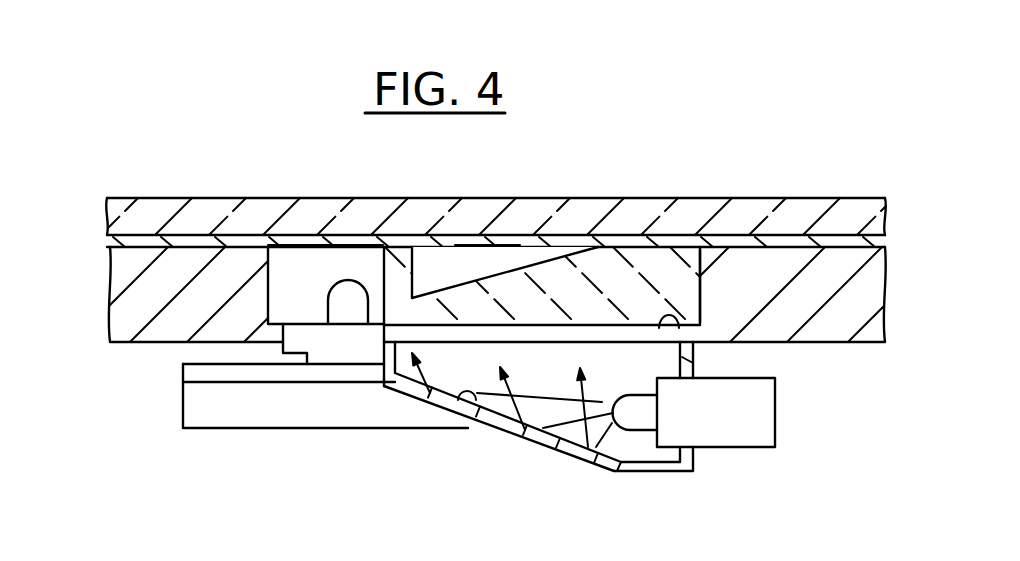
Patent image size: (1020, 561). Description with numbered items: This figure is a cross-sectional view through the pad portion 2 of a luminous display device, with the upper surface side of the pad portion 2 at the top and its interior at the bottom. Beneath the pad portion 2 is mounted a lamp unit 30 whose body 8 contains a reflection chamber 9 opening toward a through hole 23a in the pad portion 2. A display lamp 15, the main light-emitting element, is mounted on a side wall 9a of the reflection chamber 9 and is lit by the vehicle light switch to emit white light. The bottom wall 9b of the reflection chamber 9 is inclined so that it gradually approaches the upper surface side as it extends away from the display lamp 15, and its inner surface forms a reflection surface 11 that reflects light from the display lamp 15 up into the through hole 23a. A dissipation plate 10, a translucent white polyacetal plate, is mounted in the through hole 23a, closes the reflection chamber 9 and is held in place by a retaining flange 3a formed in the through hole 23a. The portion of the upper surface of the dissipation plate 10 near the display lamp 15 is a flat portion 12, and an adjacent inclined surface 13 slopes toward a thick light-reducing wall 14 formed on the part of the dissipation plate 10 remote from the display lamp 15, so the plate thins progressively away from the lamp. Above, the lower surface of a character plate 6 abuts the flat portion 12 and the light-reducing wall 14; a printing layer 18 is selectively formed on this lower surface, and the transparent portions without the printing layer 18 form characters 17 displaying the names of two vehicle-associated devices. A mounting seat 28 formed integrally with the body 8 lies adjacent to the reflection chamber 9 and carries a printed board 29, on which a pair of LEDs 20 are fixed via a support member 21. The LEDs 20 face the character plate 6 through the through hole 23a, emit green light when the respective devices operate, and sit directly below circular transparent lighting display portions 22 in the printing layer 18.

The pad portion 2 is at (772, 192).
The character plate 6 is at (213, 210).
The printing layer 18 is at (107, 243).
The lighting display portions 22 is at (333, 237).
The characters 17 is at (510, 243).
The light-reducing wall 14 is at (393, 247).
The dissipation plate 10 is at (603, 260).
The flat portion 12 is at (638, 218).
The inclined surface 13 is at (493, 272).
The through hole 23a is at (697, 260).
The retaining flange 3a is at (663, 330).
The LEDs 20 is at (330, 297).
The support member 21 is at (325, 355).
The printed board 29 is at (192, 373).
The mounting seat 28 is at (230, 418).
The reflection chamber 9 is at (606, 438).
The bottom wall 9b is at (518, 430).
The lamp unit 30 is at (562, 453).
The reflection surface 11 is at (473, 410).
The side wall 9a is at (694, 362).
The display lamp 15 is at (645, 420).
The body 8 is at (608, 470).